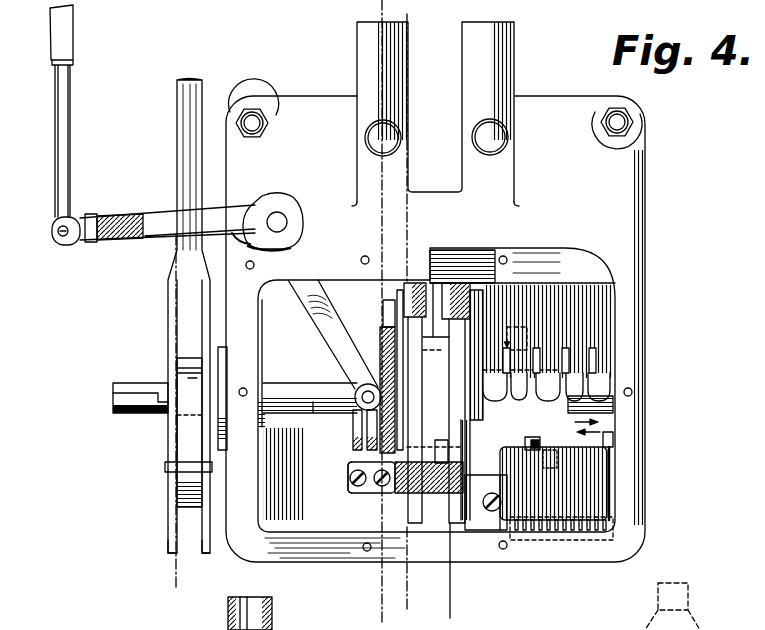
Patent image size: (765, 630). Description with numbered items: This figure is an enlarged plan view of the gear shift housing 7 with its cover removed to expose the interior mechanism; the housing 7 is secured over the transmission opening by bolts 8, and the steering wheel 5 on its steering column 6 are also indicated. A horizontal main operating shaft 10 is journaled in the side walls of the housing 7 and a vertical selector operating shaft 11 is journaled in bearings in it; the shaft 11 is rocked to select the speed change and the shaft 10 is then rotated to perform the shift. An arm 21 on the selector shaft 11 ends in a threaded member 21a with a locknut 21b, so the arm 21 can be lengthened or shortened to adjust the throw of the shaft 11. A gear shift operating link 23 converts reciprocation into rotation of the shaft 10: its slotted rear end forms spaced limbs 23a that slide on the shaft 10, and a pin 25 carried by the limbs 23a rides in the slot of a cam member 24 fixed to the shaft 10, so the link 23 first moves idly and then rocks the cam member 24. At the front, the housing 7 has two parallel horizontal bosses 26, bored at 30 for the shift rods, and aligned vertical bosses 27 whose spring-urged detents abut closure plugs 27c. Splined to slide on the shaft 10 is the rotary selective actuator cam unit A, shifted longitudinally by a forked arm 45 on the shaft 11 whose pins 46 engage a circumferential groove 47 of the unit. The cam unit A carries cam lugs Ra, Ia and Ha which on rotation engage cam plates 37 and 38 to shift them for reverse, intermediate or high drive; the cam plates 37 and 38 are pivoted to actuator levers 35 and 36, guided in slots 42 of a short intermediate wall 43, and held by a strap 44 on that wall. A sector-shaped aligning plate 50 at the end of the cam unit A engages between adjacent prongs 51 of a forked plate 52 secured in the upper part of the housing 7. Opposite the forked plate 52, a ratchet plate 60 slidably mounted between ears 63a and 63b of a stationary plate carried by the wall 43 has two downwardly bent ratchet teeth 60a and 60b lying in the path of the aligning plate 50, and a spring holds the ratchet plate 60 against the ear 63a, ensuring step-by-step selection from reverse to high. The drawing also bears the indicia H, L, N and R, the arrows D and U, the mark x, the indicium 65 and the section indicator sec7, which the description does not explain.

The housing 7 is at (633, 207).
The bolts 8 is at (253, 118).
The horizontal bosses 26 is at (372, 42).
The vertical bosses 27 is at (383, 123).
The closure plug 27c is at (369, 132).
The steering wheel 5 is at (403, 5).
The steering column 6 is at (195, 323).
The handle 65 is at (74, 45).
The arm 21 is at (160, 213).
The threaded member 21a is at (80, 218).
The locknut 21b is at (92, 214).
The gear shift operating link 23 is at (202, 92).
The limbs 23a is at (168, 548).
The selector operating shaft 11 is at (285, 222).
The main operating shaft 10 is at (128, 383).
The direction arrow x is at (313, 402).
The cam member 24 is at (185, 432).
The pin 25 is at (165, 466).
The forked plate 52 is at (607, 297).
The actuator lever 36 is at (480, 248).
The cam lug Ia is at (517, 327).
The forked arm 45 is at (310, 290).
The pins 46 is at (347, 313).
The circumferential groove 47 is at (377, 298).
The cam lug Ra is at (380, 300).
The actuator lever 35 is at (410, 286).
The cam plate 38 is at (440, 460).
The rotary selective actuator cam unit A is at (432, 382).
The slots 42 is at (445, 578).
The cam plate 37 is at (417, 530).
The short intermediate wall 43 is at (352, 470).
The strap 44 is at (345, 458).
The prongs 51 is at (605, 377).
The finger H is at (483, 344).
The finger L is at (537, 344).
The finger N is at (566, 344).
The finger R is at (593, 344).
The sector-shaped aligning plate 50 is at (615, 398).
The down direction D is at (598, 422).
The up direction U is at (600, 432).
The ratchet tooth 60a is at (613, 440).
The cam lug Ha is at (557, 460).
The ratchet plate 60 is at (593, 483).
The ear 63a is at (612, 500).
The ear 63b is at (497, 522).
The ratchet tooth 60b is at (527, 443).
The bore 30 is at (268, 625).
The section line 7 sec7 is at (397, 14).